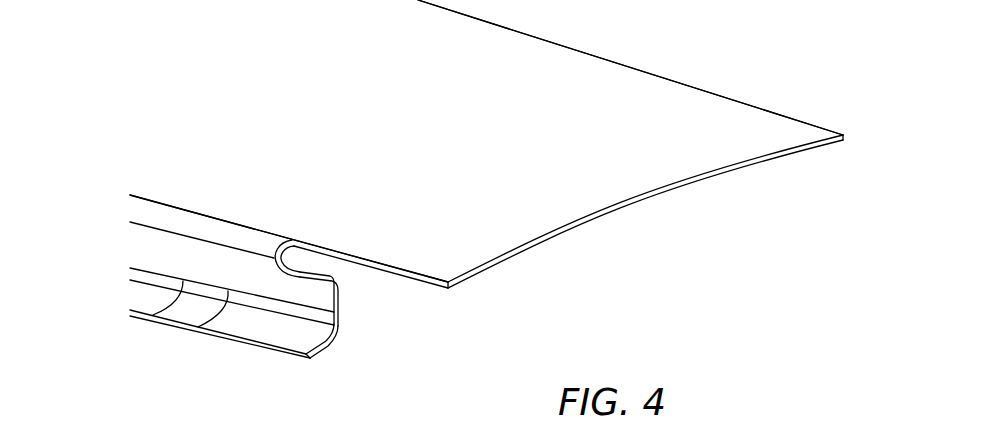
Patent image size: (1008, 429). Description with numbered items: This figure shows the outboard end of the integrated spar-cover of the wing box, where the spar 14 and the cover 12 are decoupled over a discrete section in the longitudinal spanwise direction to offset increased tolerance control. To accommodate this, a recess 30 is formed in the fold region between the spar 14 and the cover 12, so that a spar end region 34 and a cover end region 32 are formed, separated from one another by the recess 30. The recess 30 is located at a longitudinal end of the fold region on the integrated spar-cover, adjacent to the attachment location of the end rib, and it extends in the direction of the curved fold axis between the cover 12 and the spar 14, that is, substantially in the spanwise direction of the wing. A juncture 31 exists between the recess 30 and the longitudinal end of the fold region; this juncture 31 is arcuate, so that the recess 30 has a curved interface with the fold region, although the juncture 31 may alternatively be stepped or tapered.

The cover 12 is at (570, 150).
The spar 14 is at (152, 256).
The recess 30 is at (320, 266).
The juncture 31 is at (291, 246).
The cover end region 32 is at (602, 93).
The spar end region 34 is at (303, 335).